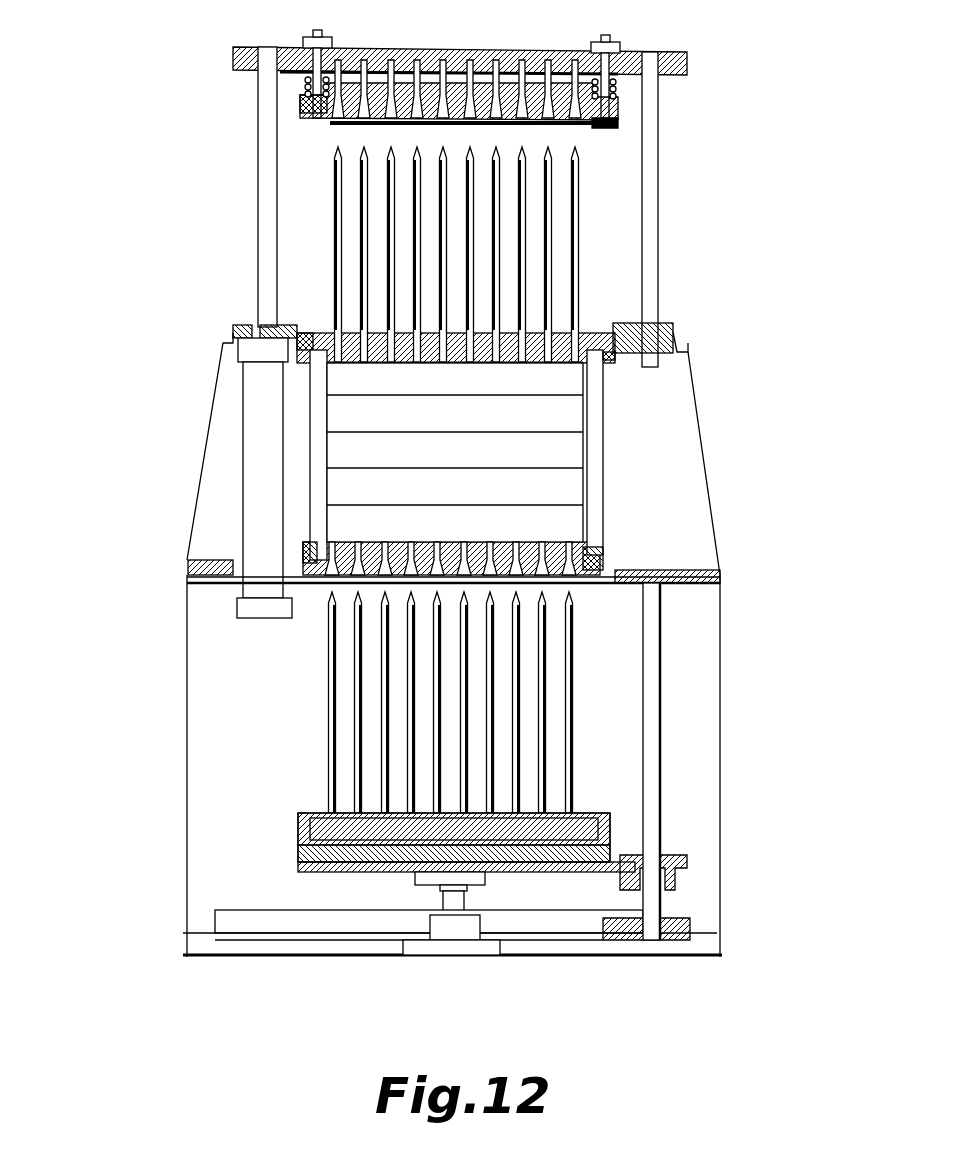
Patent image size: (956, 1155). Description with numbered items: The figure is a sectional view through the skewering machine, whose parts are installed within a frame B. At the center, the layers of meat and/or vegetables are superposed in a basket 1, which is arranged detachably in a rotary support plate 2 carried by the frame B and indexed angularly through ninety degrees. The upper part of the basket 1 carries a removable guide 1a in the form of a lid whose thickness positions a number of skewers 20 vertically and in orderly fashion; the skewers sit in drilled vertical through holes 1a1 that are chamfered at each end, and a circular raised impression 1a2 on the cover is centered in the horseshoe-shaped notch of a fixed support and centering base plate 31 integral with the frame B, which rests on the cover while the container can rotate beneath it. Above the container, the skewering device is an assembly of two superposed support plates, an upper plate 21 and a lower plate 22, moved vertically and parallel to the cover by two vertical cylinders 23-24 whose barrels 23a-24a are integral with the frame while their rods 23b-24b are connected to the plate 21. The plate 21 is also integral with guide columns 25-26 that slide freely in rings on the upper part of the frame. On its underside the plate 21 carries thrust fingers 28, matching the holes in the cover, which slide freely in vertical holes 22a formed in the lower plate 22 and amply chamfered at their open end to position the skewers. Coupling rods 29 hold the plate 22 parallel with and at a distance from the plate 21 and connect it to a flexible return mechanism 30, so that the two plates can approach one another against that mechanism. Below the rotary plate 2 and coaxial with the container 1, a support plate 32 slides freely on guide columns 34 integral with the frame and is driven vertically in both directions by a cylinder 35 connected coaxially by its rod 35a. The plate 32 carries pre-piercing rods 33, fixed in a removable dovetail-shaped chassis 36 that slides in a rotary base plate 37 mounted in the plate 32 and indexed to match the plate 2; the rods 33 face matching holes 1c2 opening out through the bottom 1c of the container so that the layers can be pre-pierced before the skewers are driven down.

The basket 1 is at (610, 475).
The guide 1a is at (603, 365).
The vertical through holes 1a1 is at (600, 327).
The circular raised impression 1a2 is at (310, 323).
The bottom 1c is at (560, 540).
The holes 1c2 is at (545, 600).
The support plate 2 is at (625, 575).
The skewers 20 is at (550, 215).
The upper plate 21 is at (687, 60).
The lower plate 22 is at (587, 135).
The vertical holes 22a is at (552, 118).
The vertical cylinders 23-24 is at (232, 447).
The barrels 23a-24a is at (252, 412).
The rods 23b-24b is at (260, 212).
The guide columns 25-26 is at (655, 198).
The thrust fingers 28 is at (430, 57).
The coupling rods 29 is at (310, 117).
The flexible return mechanism 30 is at (307, 83).
The base plate 31 is at (278, 335).
The support plate 32 is at (327, 872).
The pre-piercing rods 33 is at (360, 718).
The guide columns 34 is at (653, 710).
The cylinder 35 is at (467, 927).
The rod 35a is at (440, 897).
The chassis 36 is at (582, 815).
The rotary base plate 37 is at (297, 830).
The frame B is at (210, 560).